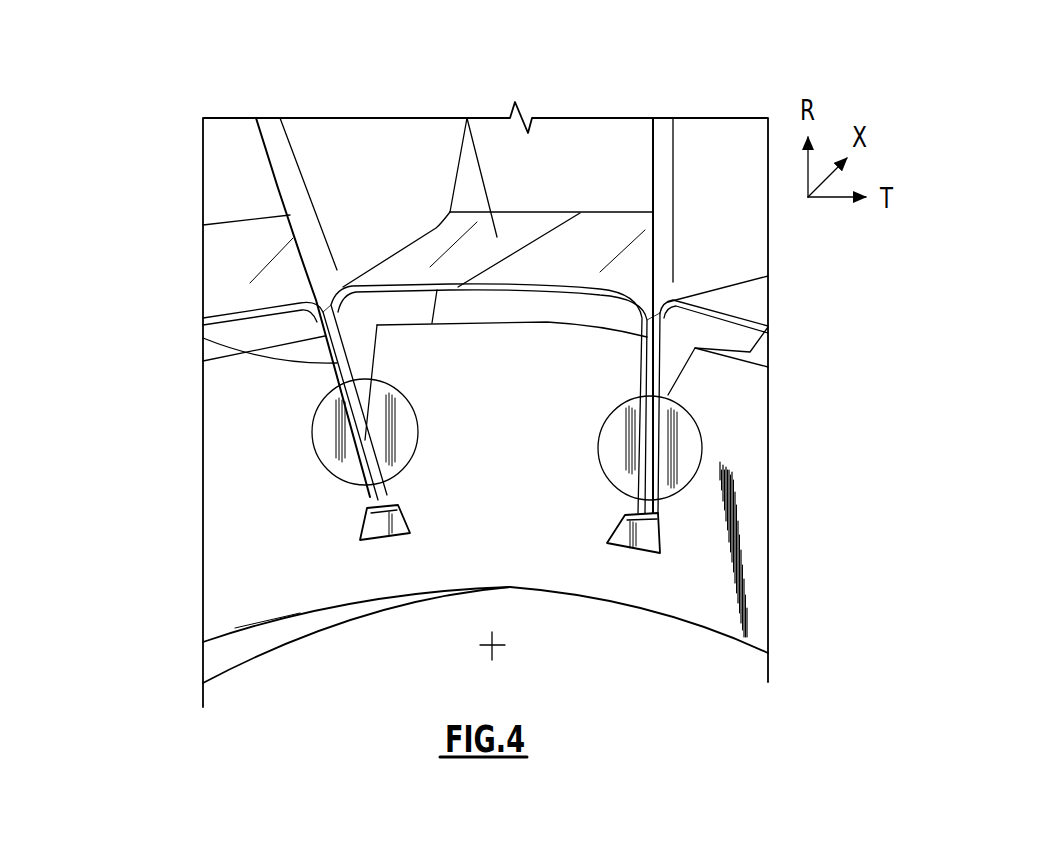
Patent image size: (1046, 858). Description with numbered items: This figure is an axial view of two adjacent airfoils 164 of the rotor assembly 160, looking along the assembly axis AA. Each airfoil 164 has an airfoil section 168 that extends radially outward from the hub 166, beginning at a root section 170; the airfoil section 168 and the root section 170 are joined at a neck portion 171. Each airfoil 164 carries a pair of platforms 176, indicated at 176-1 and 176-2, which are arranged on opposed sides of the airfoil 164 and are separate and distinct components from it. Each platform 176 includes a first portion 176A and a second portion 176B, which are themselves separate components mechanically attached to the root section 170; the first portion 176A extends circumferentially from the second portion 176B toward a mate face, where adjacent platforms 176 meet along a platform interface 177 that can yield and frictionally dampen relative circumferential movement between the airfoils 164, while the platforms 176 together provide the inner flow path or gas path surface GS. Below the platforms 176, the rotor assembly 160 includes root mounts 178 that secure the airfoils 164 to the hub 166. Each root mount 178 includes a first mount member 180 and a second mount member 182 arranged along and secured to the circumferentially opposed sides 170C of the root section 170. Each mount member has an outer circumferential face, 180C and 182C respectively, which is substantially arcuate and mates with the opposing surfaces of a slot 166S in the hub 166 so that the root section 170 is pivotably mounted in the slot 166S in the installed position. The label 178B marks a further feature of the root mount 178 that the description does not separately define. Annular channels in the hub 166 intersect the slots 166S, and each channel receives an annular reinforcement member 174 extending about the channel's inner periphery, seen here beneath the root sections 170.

The rotor assembly 160 is at (142, 95).
The airfoil 164 is at (285, 113).
The airfoil section 168 is at (342, 135).
The platform 176 is at (515, 162).
The first platform 176-1 is at (237, 252).
The second platform 176-2 is at (518, 223).
The first portion of platform 176A is at (225, 290).
The second portion of platform 176B is at (420, 308).
The platform interface 177 is at (605, 196).
The gas path surface GS is at (467, 118).
The root mount 178 is at (700, 403).
The attachment surface 178B is at (222, 348).
The hub 166 is at (195, 428).
The slot 166S is at (360, 515).
The root section 170 is at (320, 470).
The neck portion 171 is at (371, 352).
The first mount member 180 is at (323, 438).
The outer circumferential face of first mount member 180C is at (330, 452).
The circumferentially opposed sides of root section 170C is at (330, 468).
The second mount member 182 is at (407, 432).
The outer circumferential face of second mount member 182C is at (407, 437).
The reinforcement member 174 is at (380, 537).
The assembly axis AA is at (495, 648).